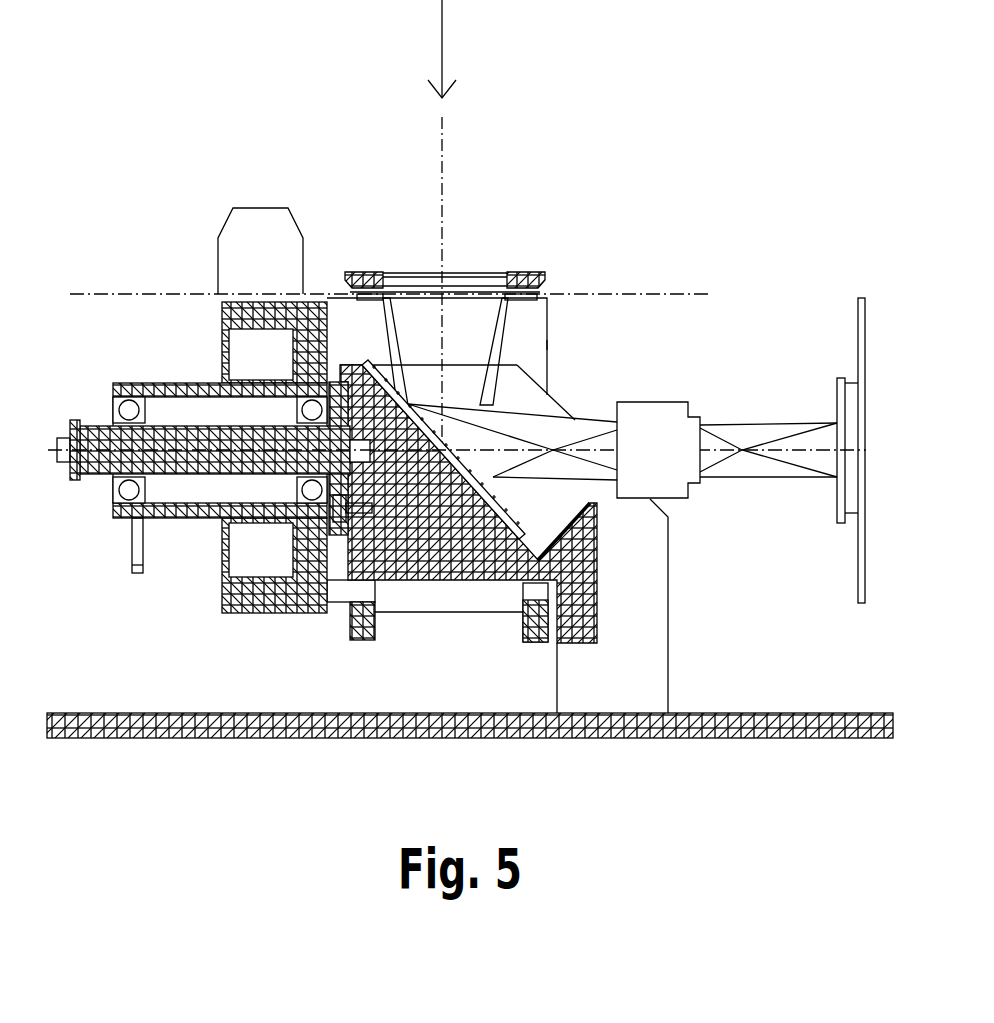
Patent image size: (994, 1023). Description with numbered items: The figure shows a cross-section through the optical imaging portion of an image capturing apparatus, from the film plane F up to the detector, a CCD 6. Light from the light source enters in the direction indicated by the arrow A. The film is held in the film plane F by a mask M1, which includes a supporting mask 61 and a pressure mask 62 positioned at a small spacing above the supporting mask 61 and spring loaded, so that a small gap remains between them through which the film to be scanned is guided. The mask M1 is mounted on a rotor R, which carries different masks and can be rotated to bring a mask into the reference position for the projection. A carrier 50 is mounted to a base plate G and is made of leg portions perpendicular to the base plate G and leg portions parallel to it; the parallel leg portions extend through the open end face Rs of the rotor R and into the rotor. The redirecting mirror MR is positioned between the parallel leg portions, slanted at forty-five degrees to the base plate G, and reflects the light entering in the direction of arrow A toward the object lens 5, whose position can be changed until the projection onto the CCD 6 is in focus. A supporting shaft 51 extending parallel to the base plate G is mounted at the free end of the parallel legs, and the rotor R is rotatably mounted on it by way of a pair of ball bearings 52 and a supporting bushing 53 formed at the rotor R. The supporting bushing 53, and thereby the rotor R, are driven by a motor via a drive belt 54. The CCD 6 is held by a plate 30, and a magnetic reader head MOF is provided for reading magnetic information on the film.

The arrow indicating direction of light incidence A is at (446, 49).
The mask M1 is at (481, 262).
The film plane F is at (648, 294).
The magnetic reader head MOF is at (238, 223).
The pressure mask 62 is at (521, 272).
The supporting mask 61 is at (547, 311).
The open end face of the rotor Rs is at (547, 345).
The redirecting mirror MR is at (508, 508).
The rotor R is at (236, 627).
The supporting bushing 53 is at (192, 385).
The supporting shaft 51 is at (213, 455).
The ball bearings 52 is at (140, 407).
The drive belt 54 is at (133, 543).
The object lens 5 is at (665, 415).
The carrier 50 is at (660, 650).
The CCD 6 is at (838, 503).
The plate 30 is at (858, 587).
The base plate G is at (775, 740).